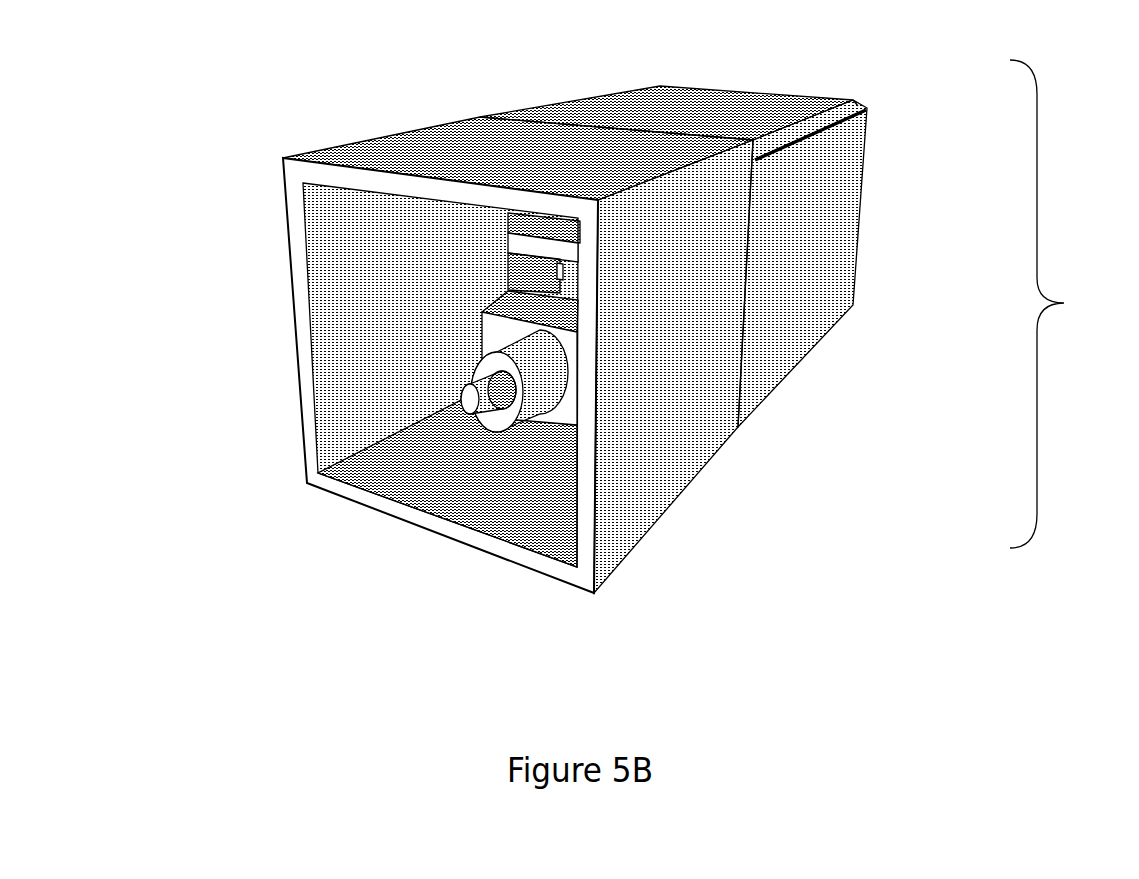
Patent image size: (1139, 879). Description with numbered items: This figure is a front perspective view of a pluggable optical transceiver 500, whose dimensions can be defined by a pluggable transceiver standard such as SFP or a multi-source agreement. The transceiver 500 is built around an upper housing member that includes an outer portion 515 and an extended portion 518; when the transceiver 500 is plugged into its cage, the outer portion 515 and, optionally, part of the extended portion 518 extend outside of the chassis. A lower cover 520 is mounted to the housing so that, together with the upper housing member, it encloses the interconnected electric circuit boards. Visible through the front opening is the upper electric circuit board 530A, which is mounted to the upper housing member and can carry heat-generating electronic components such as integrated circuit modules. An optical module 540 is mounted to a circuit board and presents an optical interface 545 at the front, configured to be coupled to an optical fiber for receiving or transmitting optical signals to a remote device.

The pluggable optical transceiver 500 is at (1064, 304).
The outer portion 515 is at (677, 427).
The extended portion 518 is at (705, 102).
The lower cover 520 is at (818, 282).
The upper electric circuit board 530A is at (527, 237).
The optical module 540 is at (483, 337).
The optical interface 545 is at (472, 403).